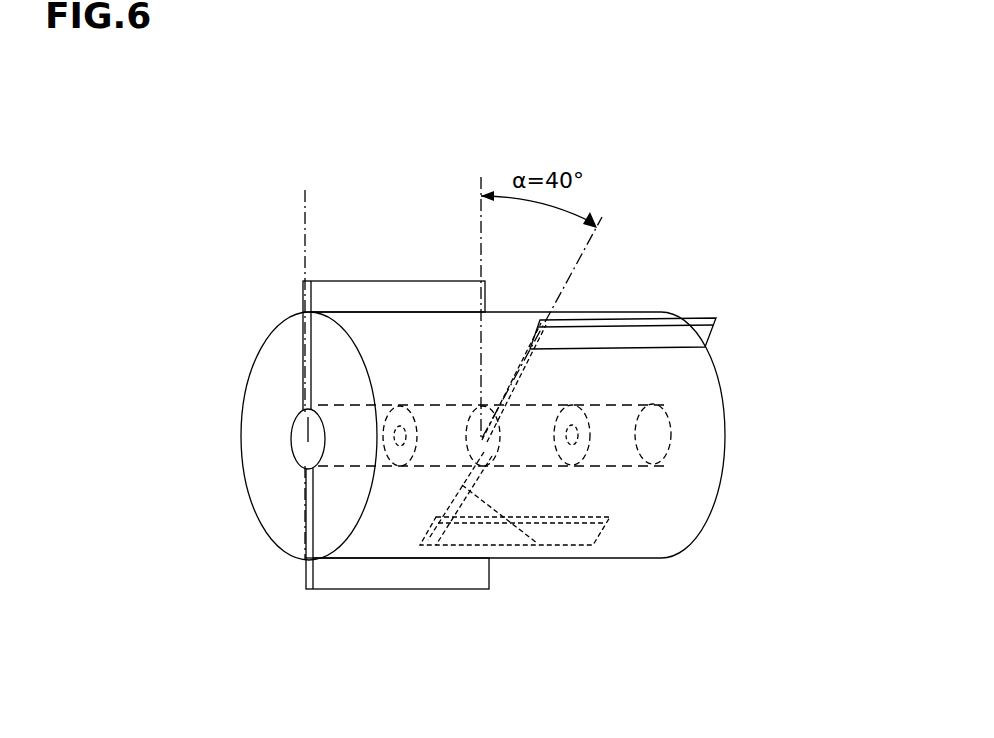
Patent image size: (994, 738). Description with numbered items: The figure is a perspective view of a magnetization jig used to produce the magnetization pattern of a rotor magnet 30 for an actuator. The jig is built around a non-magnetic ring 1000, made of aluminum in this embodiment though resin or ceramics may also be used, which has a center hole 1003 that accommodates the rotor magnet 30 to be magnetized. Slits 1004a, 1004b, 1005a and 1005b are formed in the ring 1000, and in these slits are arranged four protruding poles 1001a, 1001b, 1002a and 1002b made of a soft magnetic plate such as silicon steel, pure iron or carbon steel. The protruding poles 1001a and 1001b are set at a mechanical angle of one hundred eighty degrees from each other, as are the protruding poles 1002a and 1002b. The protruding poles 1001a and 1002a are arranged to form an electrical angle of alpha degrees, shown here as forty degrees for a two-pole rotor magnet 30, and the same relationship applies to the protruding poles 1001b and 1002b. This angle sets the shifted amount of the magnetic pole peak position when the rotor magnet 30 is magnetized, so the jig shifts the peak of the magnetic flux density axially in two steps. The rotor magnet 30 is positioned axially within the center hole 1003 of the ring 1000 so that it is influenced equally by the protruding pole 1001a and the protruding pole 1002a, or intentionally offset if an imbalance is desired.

The non-magnetic ring 1000 is at (630, 313).
The rotor magnet 30 is at (435, 423).
The protruding pole 1001a is at (302, 295).
The protruding pole 1001b is at (383, 592).
The protruding pole 1002a is at (718, 322).
The protruding pole 1002b is at (450, 533).
The center hole 1003 is at (305, 436).
The slit 1004a is at (306, 358).
The slit 1004b is at (306, 533).
The slit 1005a is at (497, 405).
The slit 1005b is at (540, 543).